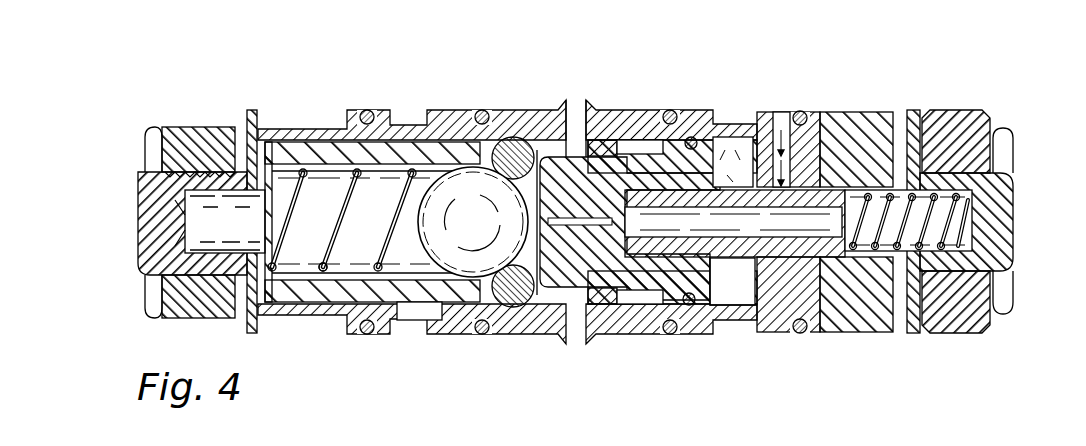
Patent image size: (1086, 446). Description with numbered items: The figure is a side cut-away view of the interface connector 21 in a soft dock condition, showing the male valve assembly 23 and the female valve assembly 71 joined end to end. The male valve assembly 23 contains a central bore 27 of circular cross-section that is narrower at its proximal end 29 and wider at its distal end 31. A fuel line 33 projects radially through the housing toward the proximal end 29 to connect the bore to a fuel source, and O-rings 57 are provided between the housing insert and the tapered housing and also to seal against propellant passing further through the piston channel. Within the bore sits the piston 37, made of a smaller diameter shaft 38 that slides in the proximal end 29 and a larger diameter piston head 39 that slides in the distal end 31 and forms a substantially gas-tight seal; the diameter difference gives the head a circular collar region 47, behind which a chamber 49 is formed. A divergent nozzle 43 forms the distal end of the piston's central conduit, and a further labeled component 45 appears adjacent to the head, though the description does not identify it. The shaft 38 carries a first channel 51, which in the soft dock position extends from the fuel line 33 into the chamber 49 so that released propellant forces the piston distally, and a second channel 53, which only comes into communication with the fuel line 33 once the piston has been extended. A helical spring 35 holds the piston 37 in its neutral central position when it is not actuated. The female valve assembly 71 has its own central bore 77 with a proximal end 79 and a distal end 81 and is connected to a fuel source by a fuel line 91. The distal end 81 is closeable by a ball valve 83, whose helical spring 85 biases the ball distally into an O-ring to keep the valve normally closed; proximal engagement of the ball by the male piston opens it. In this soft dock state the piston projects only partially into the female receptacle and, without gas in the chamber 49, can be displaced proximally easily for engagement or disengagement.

The interface connector 21 is at (569, 445).
The male valve assembly 23 is at (934, 90).
The central bore 27 is at (732, 296).
The proximal end 29 is at (990, 215).
The distal end 31 is at (628, 142).
The fuel line 33 is at (783, 112).
The helical spring 35 is at (1008, 250).
The piston 37 is at (637, 168).
The shaft 38 is at (787, 332).
The piston head 39 is at (578, 290).
The divergent nozzle 43 is at (528, 334).
The valve seat 45 is at (548, 150).
The collar region 47 is at (714, 287).
The chamber 49 is at (727, 158).
The first channel 51 is at (753, 197).
The second channel 53 is at (832, 190).
The O-ring 57 is at (482, 334).
The female valve assembly 71 is at (236, 96).
The central bore 77 is at (380, 192).
The proximal end 79 is at (283, 180).
The distal end 81 is at (481, 110).
The ball valve 83 is at (413, 260).
The helical spring 85 is at (323, 272).
The fuel line 91 is at (403, 320).